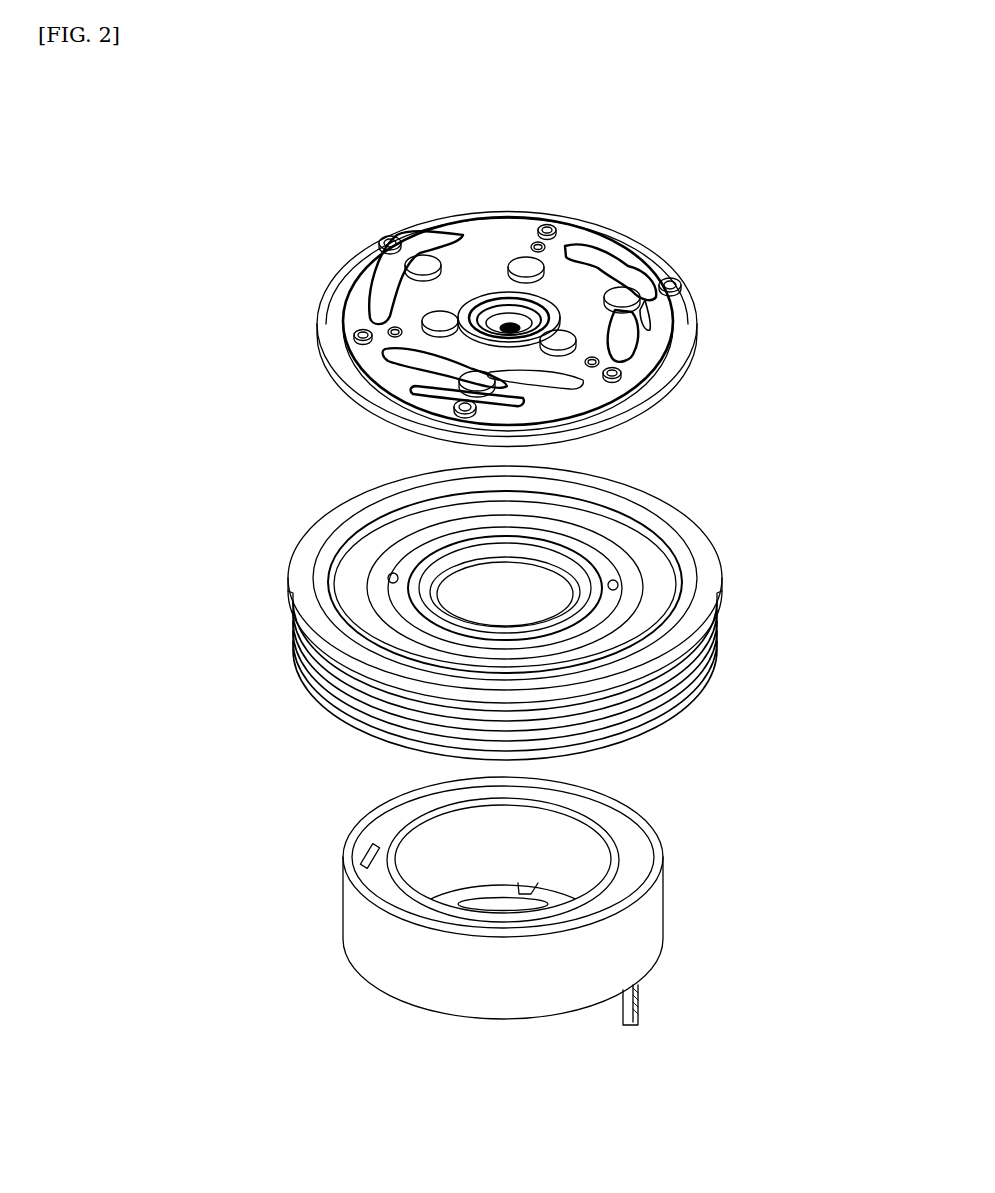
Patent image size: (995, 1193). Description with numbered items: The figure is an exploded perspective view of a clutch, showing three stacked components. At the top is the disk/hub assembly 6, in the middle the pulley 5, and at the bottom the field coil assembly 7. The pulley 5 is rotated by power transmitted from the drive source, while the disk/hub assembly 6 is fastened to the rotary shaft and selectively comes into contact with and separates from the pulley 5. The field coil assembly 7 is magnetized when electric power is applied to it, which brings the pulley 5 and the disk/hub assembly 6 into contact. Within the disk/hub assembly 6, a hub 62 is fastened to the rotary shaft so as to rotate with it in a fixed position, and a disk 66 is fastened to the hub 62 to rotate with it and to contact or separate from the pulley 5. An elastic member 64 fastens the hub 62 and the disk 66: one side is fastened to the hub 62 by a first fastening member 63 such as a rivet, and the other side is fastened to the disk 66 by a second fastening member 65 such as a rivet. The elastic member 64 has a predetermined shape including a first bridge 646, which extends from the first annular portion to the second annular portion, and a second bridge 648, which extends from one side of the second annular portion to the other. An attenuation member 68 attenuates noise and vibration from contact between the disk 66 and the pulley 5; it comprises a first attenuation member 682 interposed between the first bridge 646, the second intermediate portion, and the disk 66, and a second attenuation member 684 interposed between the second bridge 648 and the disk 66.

The pulley 5 is at (262, 566).
The disk/hub assembly 6 is at (296, 302).
The field coil assembly 7 is at (318, 882).
The hub 62 is at (483, 291).
The first fastening member 63 is at (522, 260).
The elastic member 64 is at (353, 258).
The second fastening member 65 is at (393, 236).
The disk 66 is at (680, 355).
The attenuation member 68 is at (592, 140).
The first attenuation member 682 is at (548, 226).
The second attenuation member 684 is at (620, 293).
The first bridge 646 is at (607, 360).
The second bridge 648 is at (636, 312).